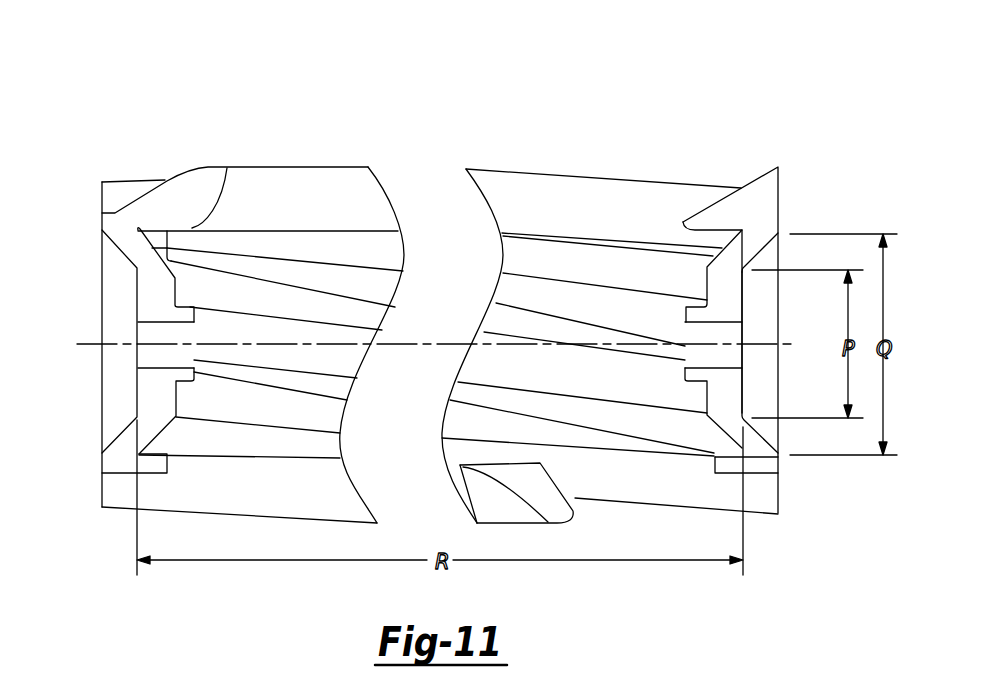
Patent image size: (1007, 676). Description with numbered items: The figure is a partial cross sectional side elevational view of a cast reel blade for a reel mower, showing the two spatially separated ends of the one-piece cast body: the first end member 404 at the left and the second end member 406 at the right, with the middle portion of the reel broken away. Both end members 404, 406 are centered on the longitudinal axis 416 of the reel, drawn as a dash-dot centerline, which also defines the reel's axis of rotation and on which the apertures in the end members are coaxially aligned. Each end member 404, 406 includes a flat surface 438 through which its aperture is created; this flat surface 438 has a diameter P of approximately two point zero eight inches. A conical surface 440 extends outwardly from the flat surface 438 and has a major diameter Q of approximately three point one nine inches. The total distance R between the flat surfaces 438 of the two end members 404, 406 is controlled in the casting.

The first end member 404 is at (189, 194).
The second end member 406 is at (728, 205).
The longitudinal axis 416 is at (78, 343).
The flat surface 438 is at (745, 306).
The conical surface 440 is at (768, 252).